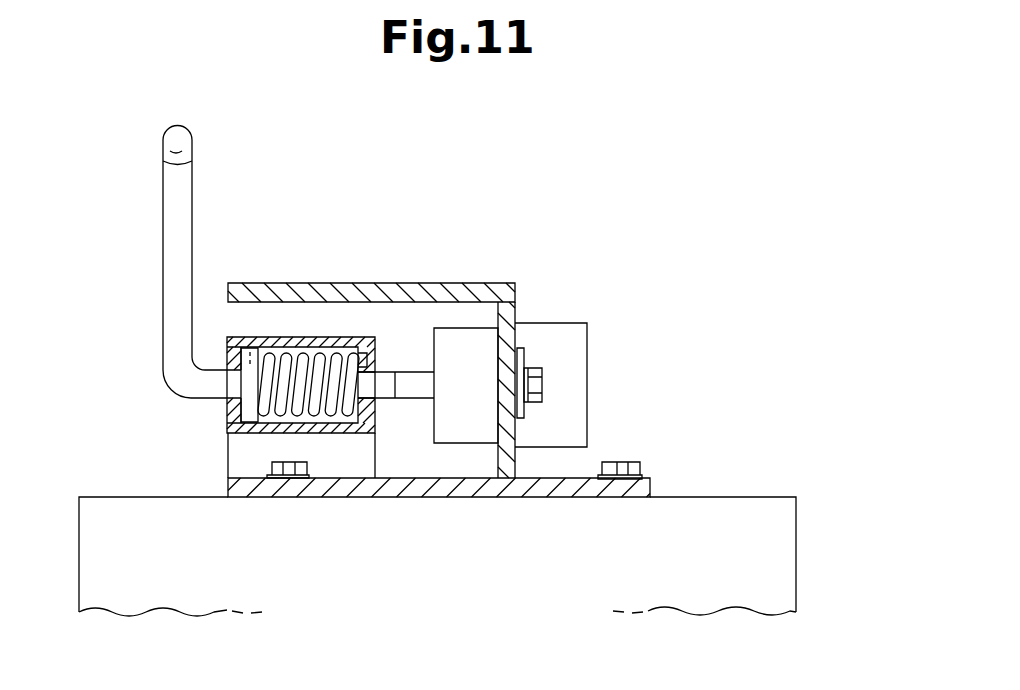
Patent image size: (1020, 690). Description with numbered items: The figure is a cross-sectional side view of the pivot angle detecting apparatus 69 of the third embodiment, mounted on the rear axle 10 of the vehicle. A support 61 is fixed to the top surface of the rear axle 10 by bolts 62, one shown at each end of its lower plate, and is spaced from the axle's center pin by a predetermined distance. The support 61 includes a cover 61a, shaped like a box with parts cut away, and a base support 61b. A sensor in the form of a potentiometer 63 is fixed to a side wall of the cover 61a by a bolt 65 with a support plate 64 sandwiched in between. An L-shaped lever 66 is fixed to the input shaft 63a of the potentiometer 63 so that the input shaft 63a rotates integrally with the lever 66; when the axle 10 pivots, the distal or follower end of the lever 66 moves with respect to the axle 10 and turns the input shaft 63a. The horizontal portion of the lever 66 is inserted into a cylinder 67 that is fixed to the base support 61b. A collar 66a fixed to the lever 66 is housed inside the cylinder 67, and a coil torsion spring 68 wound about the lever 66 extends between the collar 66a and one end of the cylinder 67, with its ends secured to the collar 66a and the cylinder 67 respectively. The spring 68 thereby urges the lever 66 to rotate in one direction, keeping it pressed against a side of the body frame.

The rear axle 10 is at (741, 496).
The support 61 is at (517, 295).
The cover 61a is at (391, 283).
The base support 61b is at (375, 452).
The bolts 62 is at (287, 463).
The potentiometer 63 is at (587, 343).
The input shaft 63a is at (407, 370).
The support plate 64 is at (522, 413).
The bolt 65 is at (542, 385).
The L-shaped lever 66 is at (162, 228).
The collar 66a is at (241, 408).
The cylinder 67 is at (259, 340).
The coil torsion spring 68 is at (310, 360).
The pivot angle detecting apparatus 69 is at (547, 217).